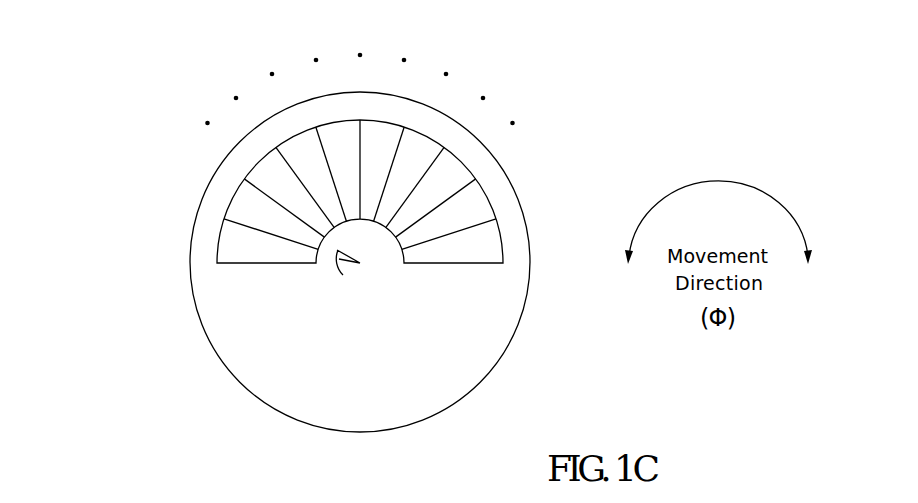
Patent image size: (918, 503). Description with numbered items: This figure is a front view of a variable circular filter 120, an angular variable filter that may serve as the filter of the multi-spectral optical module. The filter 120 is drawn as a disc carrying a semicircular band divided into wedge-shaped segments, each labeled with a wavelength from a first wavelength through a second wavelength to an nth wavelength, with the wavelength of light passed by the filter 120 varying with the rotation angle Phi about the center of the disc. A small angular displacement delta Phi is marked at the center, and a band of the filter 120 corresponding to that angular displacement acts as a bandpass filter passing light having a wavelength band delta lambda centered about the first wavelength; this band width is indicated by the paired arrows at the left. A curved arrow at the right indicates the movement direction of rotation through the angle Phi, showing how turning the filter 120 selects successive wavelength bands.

The filter 120 is at (152, 131).